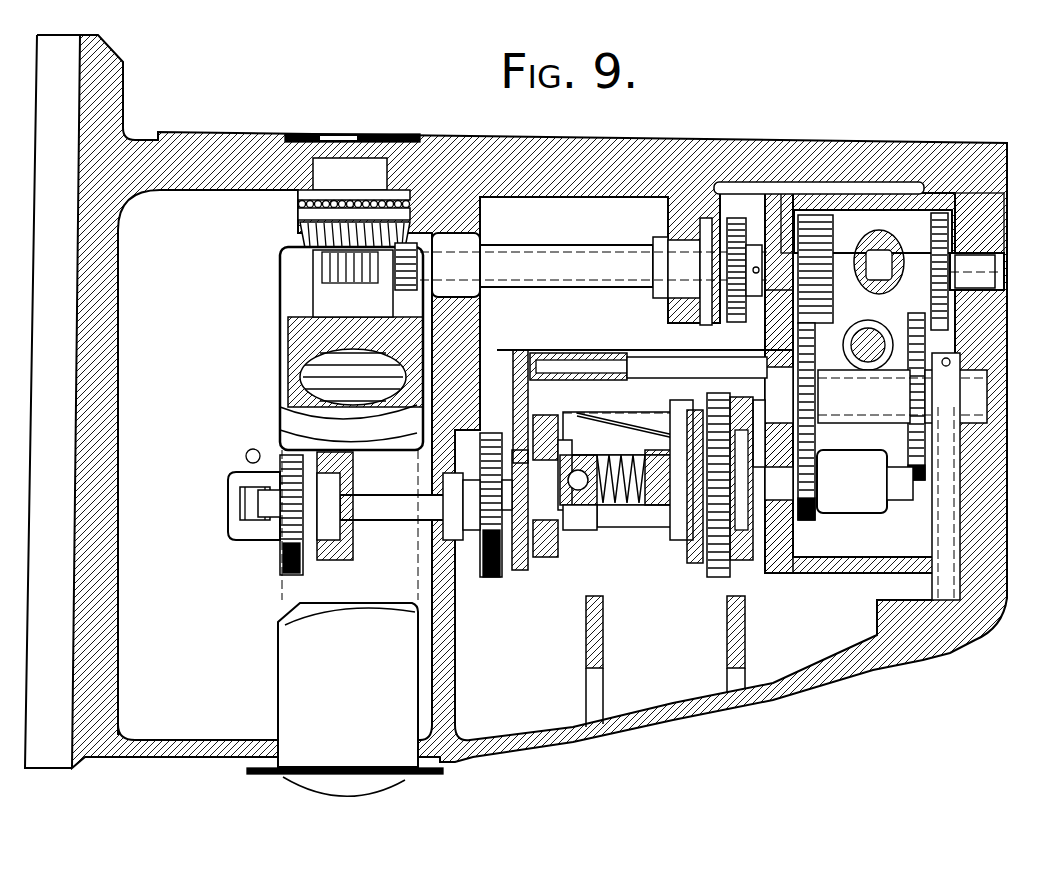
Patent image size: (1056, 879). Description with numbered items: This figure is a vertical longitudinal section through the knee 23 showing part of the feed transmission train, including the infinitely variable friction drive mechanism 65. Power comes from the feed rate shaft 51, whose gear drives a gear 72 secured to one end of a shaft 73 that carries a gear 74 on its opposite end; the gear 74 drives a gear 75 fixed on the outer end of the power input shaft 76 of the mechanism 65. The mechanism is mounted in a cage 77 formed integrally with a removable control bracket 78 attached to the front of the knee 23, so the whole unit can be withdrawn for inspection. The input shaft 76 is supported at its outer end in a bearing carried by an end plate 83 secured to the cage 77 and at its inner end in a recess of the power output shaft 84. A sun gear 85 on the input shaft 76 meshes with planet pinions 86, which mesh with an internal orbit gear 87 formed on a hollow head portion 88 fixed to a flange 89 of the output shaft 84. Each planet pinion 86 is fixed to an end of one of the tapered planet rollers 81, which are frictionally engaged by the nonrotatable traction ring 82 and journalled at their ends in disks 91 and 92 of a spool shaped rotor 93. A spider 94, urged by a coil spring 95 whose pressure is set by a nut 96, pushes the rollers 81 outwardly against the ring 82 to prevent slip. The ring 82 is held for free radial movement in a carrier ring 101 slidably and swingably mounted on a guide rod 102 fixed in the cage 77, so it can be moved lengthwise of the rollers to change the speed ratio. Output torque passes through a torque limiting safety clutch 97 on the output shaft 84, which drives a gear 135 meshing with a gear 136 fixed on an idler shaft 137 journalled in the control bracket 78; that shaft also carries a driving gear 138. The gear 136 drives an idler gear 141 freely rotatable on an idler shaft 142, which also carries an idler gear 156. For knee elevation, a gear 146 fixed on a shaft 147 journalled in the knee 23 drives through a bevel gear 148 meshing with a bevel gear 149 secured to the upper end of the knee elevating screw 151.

The knee 23 is at (740, 142).
The feed rate shaft 51 is at (228, 505).
The infinitely variable friction drive mechanism 65 is at (538, 344).
The gear 72 is at (275, 535).
The shaft 73 is at (410, 506).
The gear 74 is at (490, 580).
The gear 75 is at (488, 436).
The power input shaft 76 is at (577, 462).
The cage 77 is at (566, 352).
The control bracket 78 is at (1000, 335).
The tapered planet rollers 81 is at (625, 420).
The traction ring 82 is at (552, 562).
The end plate 83 is at (510, 562).
The power output shaft 84 is at (878, 492).
The sun gear 85 is at (724, 570).
The planet pinions 86 is at (722, 397).
The internal orbit gear 87 is at (699, 577).
The hollow head portion 88 is at (748, 562).
The flange 89 is at (778, 433).
The disk 91 is at (540, 562).
The disk 92 is at (685, 572).
The spool shaped rotor 93 is at (586, 512).
The spider 94 is at (683, 432).
The coil spring 95 is at (630, 505).
The nut 96 is at (660, 522).
The torque limiting safety clutch 97 is at (880, 512).
The carrier ring 101 is at (585, 548).
The guide rod 102 is at (672, 368).
The gear 135 is at (808, 522).
The gear 136 is at (780, 325).
The idler shaft 137 is at (858, 418).
The gear 138 is at (910, 402).
The idler gear 141 is at (835, 226).
The idler shaft 142 is at (990, 262).
The gear 146 is at (736, 220).
The shaft 147 is at (595, 271).
The bevel gear 148 is at (405, 253).
The bevel gear 149 is at (298, 224).
The knee elevating screw 151 is at (320, 270).
The idler gear 156 is at (931, 228).